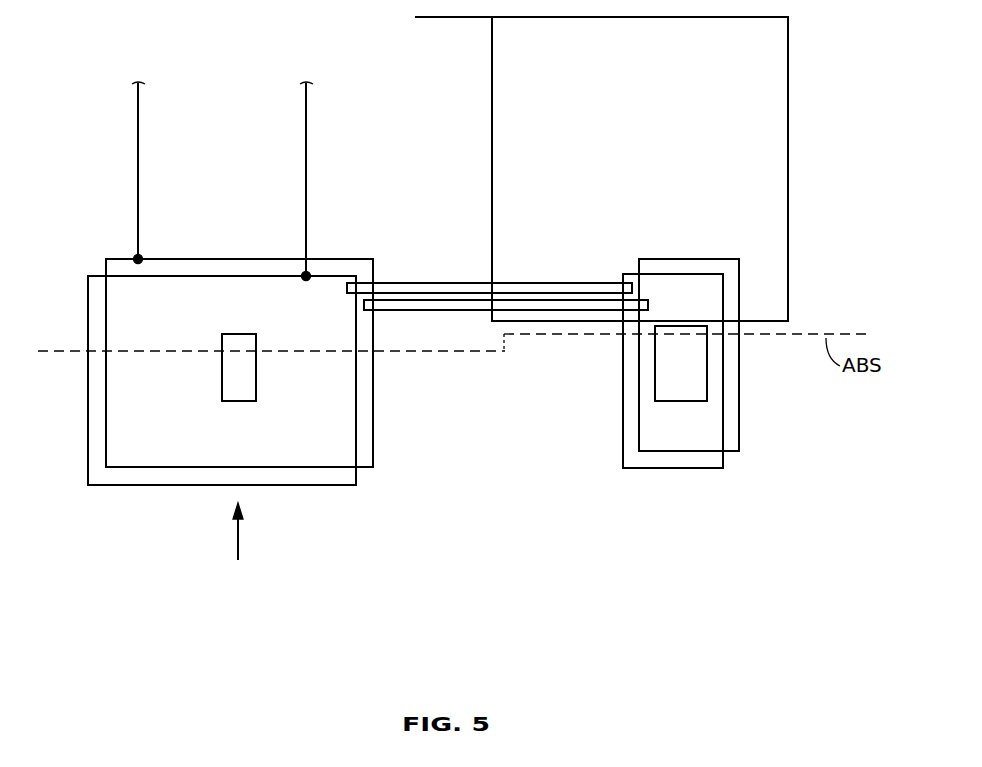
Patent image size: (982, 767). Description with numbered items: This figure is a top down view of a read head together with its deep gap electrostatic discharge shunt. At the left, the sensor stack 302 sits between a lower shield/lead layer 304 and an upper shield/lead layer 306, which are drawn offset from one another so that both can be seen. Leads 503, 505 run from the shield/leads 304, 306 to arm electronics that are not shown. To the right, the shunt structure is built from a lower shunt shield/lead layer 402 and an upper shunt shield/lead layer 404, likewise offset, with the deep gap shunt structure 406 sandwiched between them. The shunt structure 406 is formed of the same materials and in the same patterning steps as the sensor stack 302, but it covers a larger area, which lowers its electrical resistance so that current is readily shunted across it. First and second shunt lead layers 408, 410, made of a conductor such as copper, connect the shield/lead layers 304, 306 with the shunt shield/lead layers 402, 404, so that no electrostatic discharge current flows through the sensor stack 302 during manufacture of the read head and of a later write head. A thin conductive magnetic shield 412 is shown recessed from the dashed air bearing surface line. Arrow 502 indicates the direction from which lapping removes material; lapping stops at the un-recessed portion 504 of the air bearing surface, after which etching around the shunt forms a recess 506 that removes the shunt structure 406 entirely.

The sensor stack 302 is at (250, 383).
The lower shield/lead layer 304 is at (320, 274).
The upper shield/lead layer 306 is at (272, 292).
The lower shunt shield/lead layer 402 is at (730, 410).
The upper shunt shield/lead layer 404 is at (672, 458).
The deep gap shunt structure 406 is at (690, 363).
The first shunt lead layer 408 is at (418, 305).
The second shunt lead layer 410 is at (418, 292).
The shield 412 is at (618, 152).
The arrow 502 is at (240, 540).
The lead 503 is at (141, 97).
The un-recessed portion of the ABS 504 is at (137, 352).
The lead 505 is at (309, 97).
The recess 506 is at (506, 335).